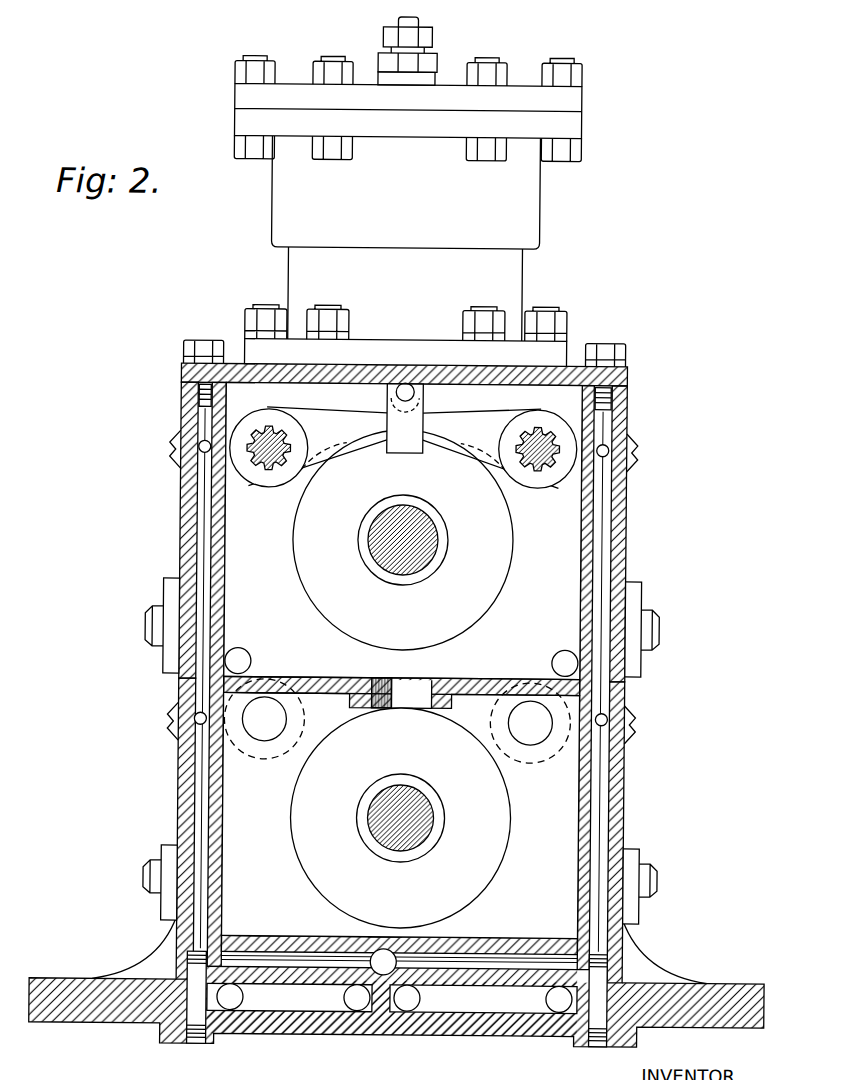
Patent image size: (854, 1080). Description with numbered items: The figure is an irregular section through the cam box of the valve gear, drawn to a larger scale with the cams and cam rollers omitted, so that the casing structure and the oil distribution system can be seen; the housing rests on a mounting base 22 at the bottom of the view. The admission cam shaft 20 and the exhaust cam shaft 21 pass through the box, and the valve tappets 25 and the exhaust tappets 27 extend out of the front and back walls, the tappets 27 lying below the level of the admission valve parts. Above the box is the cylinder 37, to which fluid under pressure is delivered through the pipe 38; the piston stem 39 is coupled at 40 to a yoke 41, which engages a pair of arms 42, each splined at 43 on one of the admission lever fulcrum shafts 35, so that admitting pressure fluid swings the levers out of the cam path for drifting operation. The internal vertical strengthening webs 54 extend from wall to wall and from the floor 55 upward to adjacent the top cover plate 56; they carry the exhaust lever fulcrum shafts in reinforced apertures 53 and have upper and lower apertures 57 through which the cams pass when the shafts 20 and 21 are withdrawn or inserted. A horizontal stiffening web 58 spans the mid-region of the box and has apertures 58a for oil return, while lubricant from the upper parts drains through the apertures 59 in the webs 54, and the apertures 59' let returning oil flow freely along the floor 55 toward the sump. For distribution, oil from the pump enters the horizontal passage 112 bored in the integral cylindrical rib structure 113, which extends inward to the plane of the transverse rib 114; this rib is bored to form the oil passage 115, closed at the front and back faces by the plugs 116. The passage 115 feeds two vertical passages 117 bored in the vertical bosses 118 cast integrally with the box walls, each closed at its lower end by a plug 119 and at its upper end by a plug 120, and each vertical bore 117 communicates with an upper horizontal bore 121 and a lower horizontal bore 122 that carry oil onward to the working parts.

The admission cam shaft 20 is at (428, 558).
The exhaust cam shaft 21 is at (425, 830).
The base 22 is at (113, 1026).
The valve tappet 25 is at (145, 622).
The tappet 27 is at (145, 902).
The admission lever fulcrum shaft 35 is at (275, 432).
The cylinder 37 is at (407, 199).
The pipe 38 is at (413, 22).
The piston stem 39 is at (422, 394).
The coupling 40 is at (394, 392).
The yoke 41 is at (405, 418).
The arm 42 is at (403, 448).
The spline 43 is at (281, 472).
The reinforced aperture 53 is at (244, 720).
The internal vertical strengthening web 54 is at (402, 660).
The floor 55 is at (440, 1035).
The top cover plate 56 is at (352, 365).
The aperture 57 is at (315, 614).
The horizontal stiffening web 58 is at (311, 680).
The aperture 58a is at (432, 680).
The aperture 59 is at (401, 651).
The aperture 59' is at (394, 997).
The horizontal passage 112 is at (380, 952).
The cylindrical rib structure 113 is at (403, 934).
The transverse rib 114 is at (545, 952).
The oil passage 115 is at (490, 950).
The plug 116 is at (180, 960).
The vertical passage 117 is at (185, 812).
The vertical boss 118 is at (190, 522).
The plug 119 is at (200, 1047).
The plug 120 is at (197, 398).
The upper horizontal bore 121 is at (197, 447).
The lower horizontal bore 122 is at (195, 720).